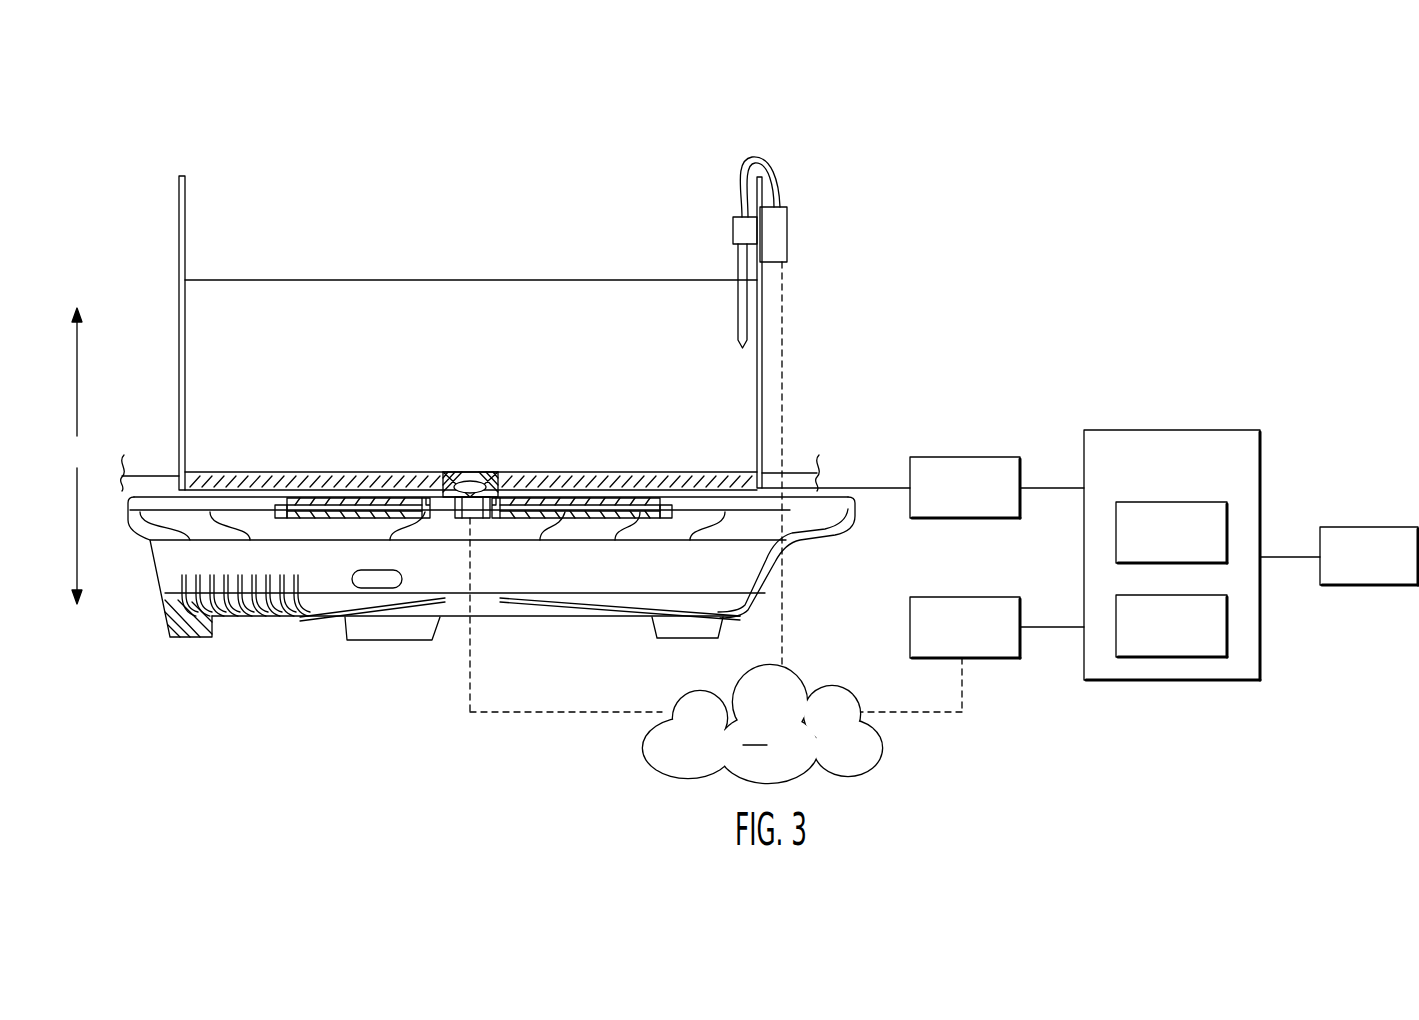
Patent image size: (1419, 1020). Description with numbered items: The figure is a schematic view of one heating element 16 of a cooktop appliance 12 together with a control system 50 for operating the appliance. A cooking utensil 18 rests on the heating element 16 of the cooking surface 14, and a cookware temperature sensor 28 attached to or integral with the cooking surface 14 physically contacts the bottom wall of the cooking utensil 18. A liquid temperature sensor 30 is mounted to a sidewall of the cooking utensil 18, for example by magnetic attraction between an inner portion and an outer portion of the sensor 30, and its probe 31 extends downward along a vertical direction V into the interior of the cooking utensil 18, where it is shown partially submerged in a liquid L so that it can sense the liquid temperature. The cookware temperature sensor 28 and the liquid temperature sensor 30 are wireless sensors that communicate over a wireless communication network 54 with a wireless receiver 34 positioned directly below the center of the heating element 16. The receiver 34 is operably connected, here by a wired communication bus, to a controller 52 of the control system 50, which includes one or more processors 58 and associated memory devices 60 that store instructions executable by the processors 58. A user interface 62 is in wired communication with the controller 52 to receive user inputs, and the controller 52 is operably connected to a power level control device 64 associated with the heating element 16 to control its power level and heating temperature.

The cooktop appliance 12 is at (176, 146).
The cooking surface 14 is at (154, 476).
The heating element 16 is at (178, 476).
The cooking utensil 18 is at (178, 231).
The cookware temperature sensor 28 is at (444, 500).
The liquid temperature sensor 30 is at (733, 232).
The probe 31 is at (738, 318).
The receiver 34 is at (951, 645).
The control system 50 is at (1204, 362).
The controller 52 is at (1158, 486).
The wireless communication network 54 is at (743, 745).
The processor 58 is at (1158, 552).
The memory device 60 is at (1158, 645).
The user interface 62 is at (1362, 575).
The power level control device 64 is at (951, 503).
The liquid L is at (436, 310).
The vertical direction V is at (77, 456).